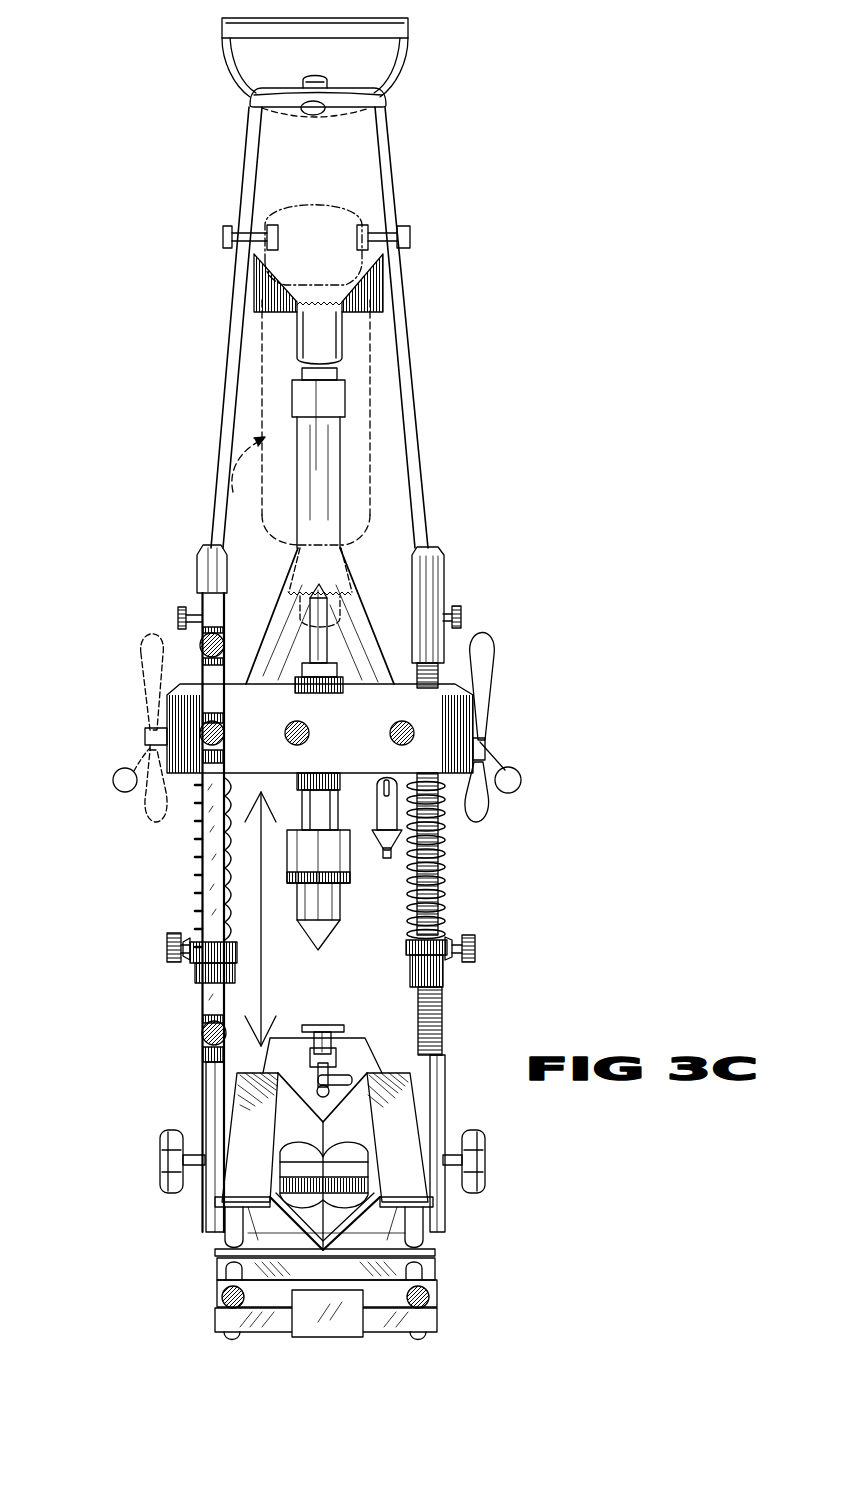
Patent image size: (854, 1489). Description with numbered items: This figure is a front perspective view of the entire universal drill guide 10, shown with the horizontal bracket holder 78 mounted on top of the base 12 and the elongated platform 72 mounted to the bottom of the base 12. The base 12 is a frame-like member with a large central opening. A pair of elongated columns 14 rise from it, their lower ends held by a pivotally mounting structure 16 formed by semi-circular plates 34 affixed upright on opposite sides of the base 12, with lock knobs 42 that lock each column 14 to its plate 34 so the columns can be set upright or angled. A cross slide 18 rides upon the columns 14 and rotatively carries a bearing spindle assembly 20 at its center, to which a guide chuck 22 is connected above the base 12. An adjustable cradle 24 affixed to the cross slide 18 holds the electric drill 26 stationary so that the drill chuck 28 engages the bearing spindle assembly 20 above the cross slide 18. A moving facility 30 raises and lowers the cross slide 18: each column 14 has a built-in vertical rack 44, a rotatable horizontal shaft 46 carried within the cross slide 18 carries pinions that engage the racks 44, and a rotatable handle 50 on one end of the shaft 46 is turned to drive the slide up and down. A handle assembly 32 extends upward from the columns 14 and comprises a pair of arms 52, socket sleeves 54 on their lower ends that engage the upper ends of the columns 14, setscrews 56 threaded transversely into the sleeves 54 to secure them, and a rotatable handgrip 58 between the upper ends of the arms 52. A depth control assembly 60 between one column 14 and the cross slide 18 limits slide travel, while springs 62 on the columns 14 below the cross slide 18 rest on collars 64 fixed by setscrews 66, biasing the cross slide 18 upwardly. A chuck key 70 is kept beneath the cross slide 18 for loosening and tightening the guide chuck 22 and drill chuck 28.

The universal drill guide 10 is at (166, 506).
The base 12 is at (440, 1297).
The elongated columns 14 is at (207, 1090).
The pivotally mounting structure 16 is at (424, 1148).
The cross slide 18 is at (244, 688).
The bearing spindle assembly 20 is at (325, 655).
The guide chuck 22 is at (340, 893).
The adjustable cradle 24 is at (331, 471).
The electric drill 26 is at (247, 489).
The drill chuck 28 is at (362, 572).
The moving facility 30 is at (488, 714).
The handle assembly 32 is at (243, 160).
The semi-circular plates 34 is at (220, 1218).
The lock knobs 42 is at (486, 1150).
The vertical rack 44 is at (440, 1012).
The rotatable horizontal shaft 46 is at (145, 736).
The rotatable handle 50 is at (110, 784).
The arms 52 is at (241, 336).
The socket sleeves 54 is at (206, 562).
The setscrews 56 is at (188, 613).
The rotatable handgrip 58 is at (236, 78).
The depth control assembly 60 is at (210, 1003).
The springs 62 is at (200, 882).
The collars 64 is at (198, 968).
The setscrews 66 is at (170, 940).
The chuck key 70 is at (390, 846).
The elongated platform 72 is at (360, 1040).
The horizontal bracket holder 78 is at (235, 1195).